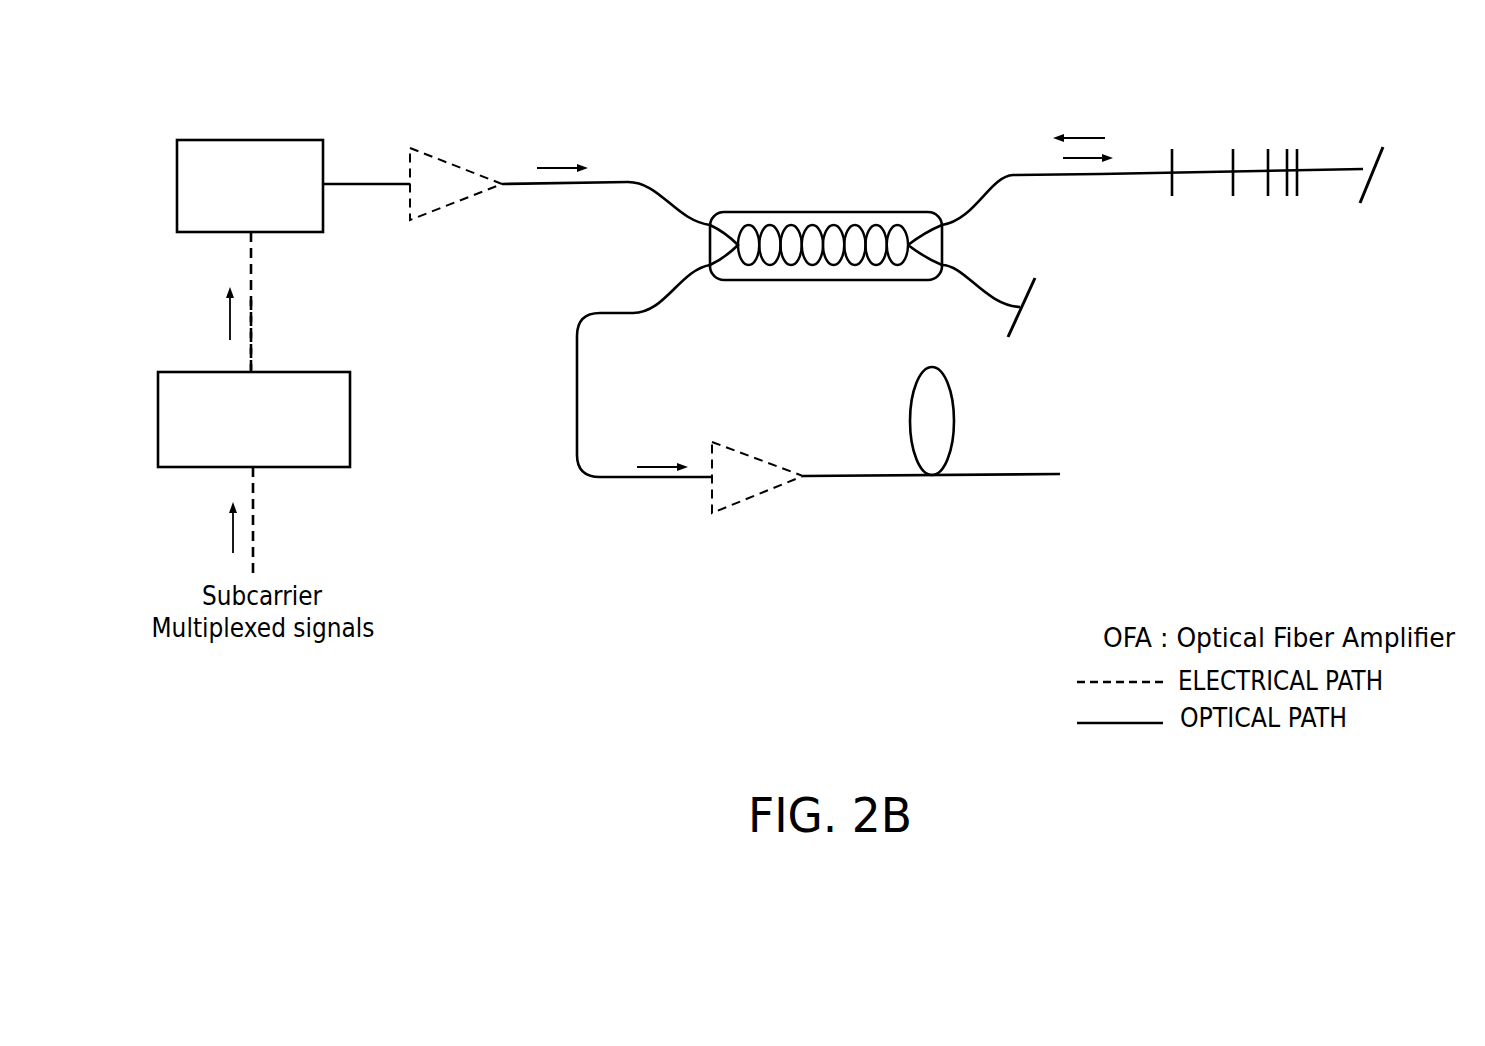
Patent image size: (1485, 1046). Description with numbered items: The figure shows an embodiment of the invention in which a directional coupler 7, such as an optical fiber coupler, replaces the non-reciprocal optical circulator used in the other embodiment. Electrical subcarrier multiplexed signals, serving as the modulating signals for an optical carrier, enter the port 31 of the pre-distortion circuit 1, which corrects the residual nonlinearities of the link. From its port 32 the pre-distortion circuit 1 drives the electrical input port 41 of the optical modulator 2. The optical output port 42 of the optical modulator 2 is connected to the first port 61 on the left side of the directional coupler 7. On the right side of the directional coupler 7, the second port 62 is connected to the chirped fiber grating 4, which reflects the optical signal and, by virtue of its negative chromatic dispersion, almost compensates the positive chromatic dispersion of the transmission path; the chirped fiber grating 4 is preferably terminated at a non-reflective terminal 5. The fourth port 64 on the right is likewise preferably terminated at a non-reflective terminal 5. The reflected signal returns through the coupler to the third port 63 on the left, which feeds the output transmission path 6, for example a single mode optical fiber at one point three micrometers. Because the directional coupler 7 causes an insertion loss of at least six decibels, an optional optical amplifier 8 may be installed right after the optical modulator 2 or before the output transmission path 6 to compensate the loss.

The pre-distortion circuit 1 is at (183, 372).
The optical modulator 2 is at (260, 140).
The chirped fiber grating 4 is at (1238, 134).
The non-reflective terminal 5 is at (1388, 174).
The output transmission path 6 is at (863, 477).
The directional coupler 7 is at (812, 212).
The optical amplifier 8 is at (453, 162).
The port 31 is at (261, 520).
The port 32 is at (272, 336).
The electrical input port 41 is at (259, 302).
The optical output port 42 is at (366, 167).
The first port 61 is at (606, 194).
The second port 62 is at (1019, 179).
The third port 63 is at (644, 371).
The fourth port 64 is at (972, 290).